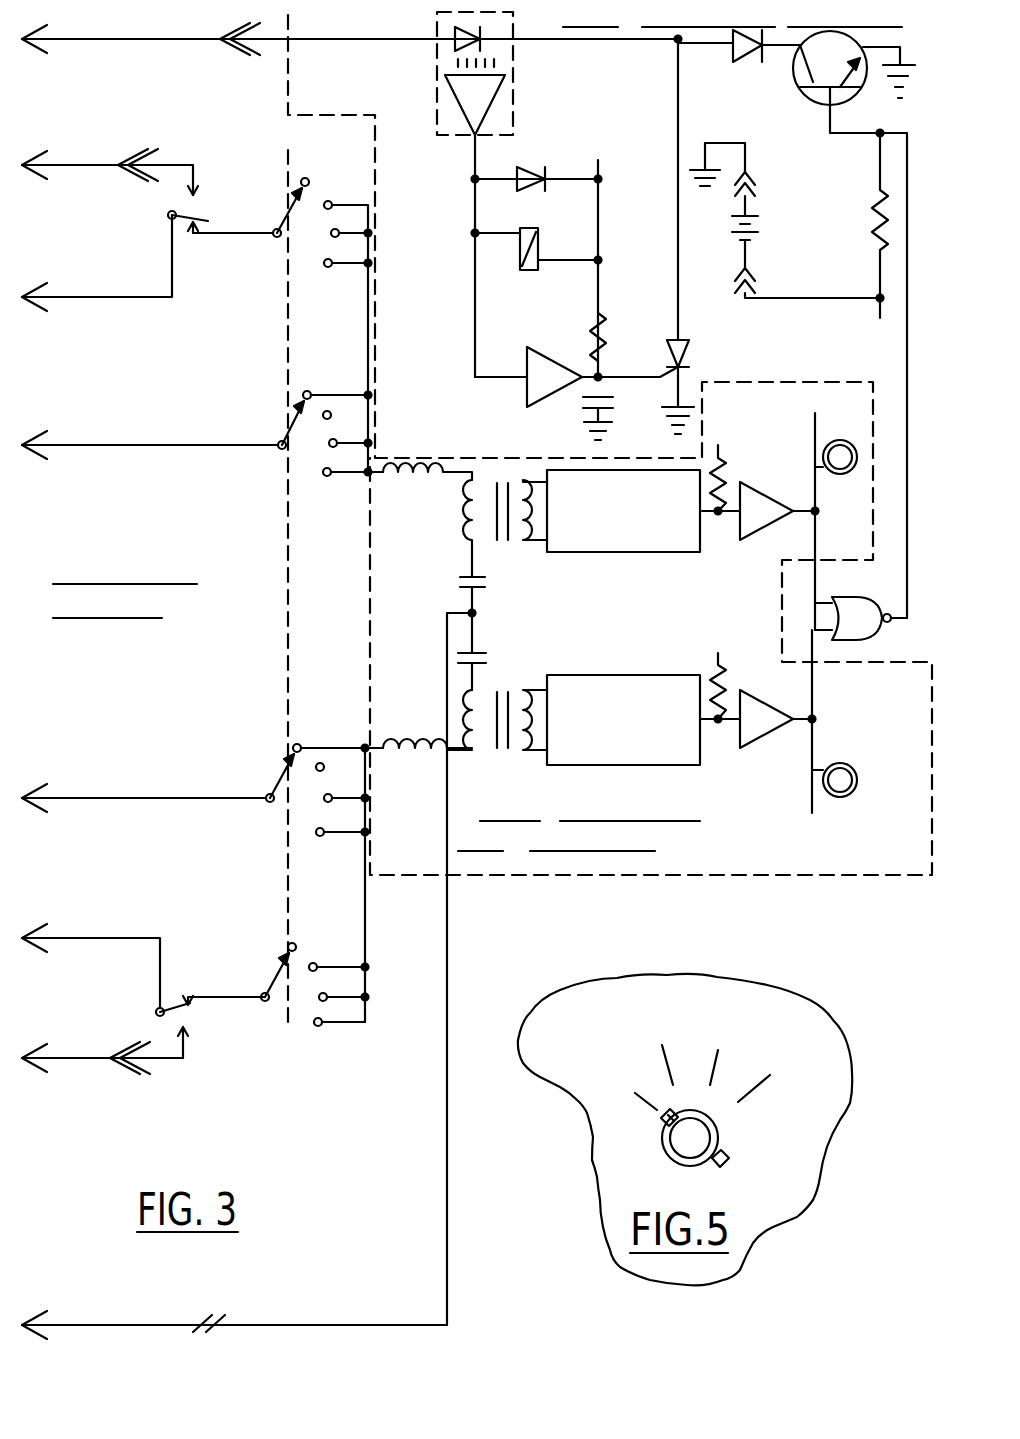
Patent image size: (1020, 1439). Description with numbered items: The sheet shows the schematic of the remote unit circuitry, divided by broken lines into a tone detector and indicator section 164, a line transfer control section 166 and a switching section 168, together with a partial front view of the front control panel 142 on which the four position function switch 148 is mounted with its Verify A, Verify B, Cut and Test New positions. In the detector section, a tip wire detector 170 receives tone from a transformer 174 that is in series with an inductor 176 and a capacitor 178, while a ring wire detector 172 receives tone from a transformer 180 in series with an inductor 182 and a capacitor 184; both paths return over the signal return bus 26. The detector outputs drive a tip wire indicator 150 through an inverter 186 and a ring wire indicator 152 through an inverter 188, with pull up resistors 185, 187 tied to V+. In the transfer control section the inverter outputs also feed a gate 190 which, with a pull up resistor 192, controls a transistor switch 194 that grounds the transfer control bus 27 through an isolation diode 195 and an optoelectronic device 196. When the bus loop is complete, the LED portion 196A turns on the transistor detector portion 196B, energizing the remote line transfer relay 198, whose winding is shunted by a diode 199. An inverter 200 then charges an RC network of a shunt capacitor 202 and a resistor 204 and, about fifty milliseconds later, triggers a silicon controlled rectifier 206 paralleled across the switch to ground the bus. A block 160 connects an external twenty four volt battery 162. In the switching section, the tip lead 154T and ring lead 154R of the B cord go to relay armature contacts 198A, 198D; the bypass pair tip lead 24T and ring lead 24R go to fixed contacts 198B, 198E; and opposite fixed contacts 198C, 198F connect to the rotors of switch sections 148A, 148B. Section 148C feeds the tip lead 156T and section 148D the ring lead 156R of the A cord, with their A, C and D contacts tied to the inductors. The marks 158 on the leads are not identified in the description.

In FIG. 3, the transfer control bus 27 is at (100, 48).
In FIG. 3, the break marks 158 is at (225, 48).
In FIG. 3, the tip lead of the bypass pair 24T is at (104, 168).
In FIG. 3, the ring lead of the bypass pair 24R is at (100, 1064).
In FIG. 3, the signal return bus 26 is at (108, 1318).
In FIG. 3, the tip lead of the B cord 154T is at (116, 300).
In FIG. 3, the ring lead of the B cord 154R is at (130, 941).
In FIG. 3, the tip lead of the A cord 156T is at (120, 448).
In FIG. 3, the ring lead of the A cord 156R is at (130, 803).
In FIG. 3, the switch section 148A is at (295, 310).
In FIG. 3, the switch section 148B is at (282, 971).
In FIG. 3, the switch section 148C is at (295, 420).
In FIG. 3, the switch section 148D is at (286, 869).
In FIG. 5, the function switch 148 is at (684, 1168).
In FIG. 5, the front control panel 142 is at (795, 1201).
In FIG. 3, the armature contact 198A is at (168, 212).
In FIG. 3, the fixed contact 198B is at (198, 178).
In FIG. 3, the fixed contact 198C is at (192, 230).
In FIG. 3, the armature contact 198D is at (155, 1018).
In FIG. 3, the fixed contact 198E is at (192, 1030).
In FIG. 3, the fixed contact 198F is at (186, 997).
In FIG. 3, the optoelectronic device 196 is at (437, 133).
In FIG. 3, the LED portion 196A is at (455, 31).
In FIG. 3, the transistor detector portion 196B is at (455, 96).
In FIG. 3, the line transfer control section 166 is at (612, 88).
In FIG. 3, the switching section 168 is at (97, 651).
In FIG. 3, the tone detector and indicator section 164 is at (720, 851).
In FIG. 3, the shunt diode 199 is at (528, 170).
In FIG. 3, the remote line transfer relay 198 is at (527, 228).
In FIG. 3, the inverter 200 is at (535, 350).
In FIG. 3, the shunt capacitor 202 is at (590, 408).
In FIG. 3, the resistor 204 is at (596, 325).
In FIG. 3, the silicon controlled rectifier 206 is at (668, 358).
In FIG. 3, the isolation diode 195 is at (758, 62).
In FIG. 3, the transistor switch 194 is at (820, 105).
In FIG. 3, the pull up resistor 192 is at (880, 208).
In FIG. 3, the block 160 is at (740, 275).
In FIG. 3, the battery 162 is at (790, 245).
In FIG. 3, the inductor 176 is at (435, 497).
In FIG. 3, the transformer 174 is at (540, 545).
In FIG. 3, the capacitor 178 is at (458, 582).
In FIG. 3, the capacitor 184 is at (480, 655).
In FIG. 3, the transformer 180 is at (526, 752).
In FIG. 3, the inductor 182 is at (436, 756).
In FIG. 3, the tip wire detector 170 is at (648, 556).
In FIG. 3, the ring wire detector 172 is at (632, 766).
In FIG. 3, the pull up resistor 185 is at (728, 475).
In FIG. 3, the inverter 186 is at (768, 528).
In FIG. 3, the pull up resistor 187 is at (728, 680).
In FIG. 3, the inverter 188 is at (770, 732).
In FIG. 3, the tip wire indicator 150 is at (822, 458).
In FIG. 3, the ring wire indicator 152 is at (823, 780).
In FIG. 3, the gate 190 is at (855, 636).